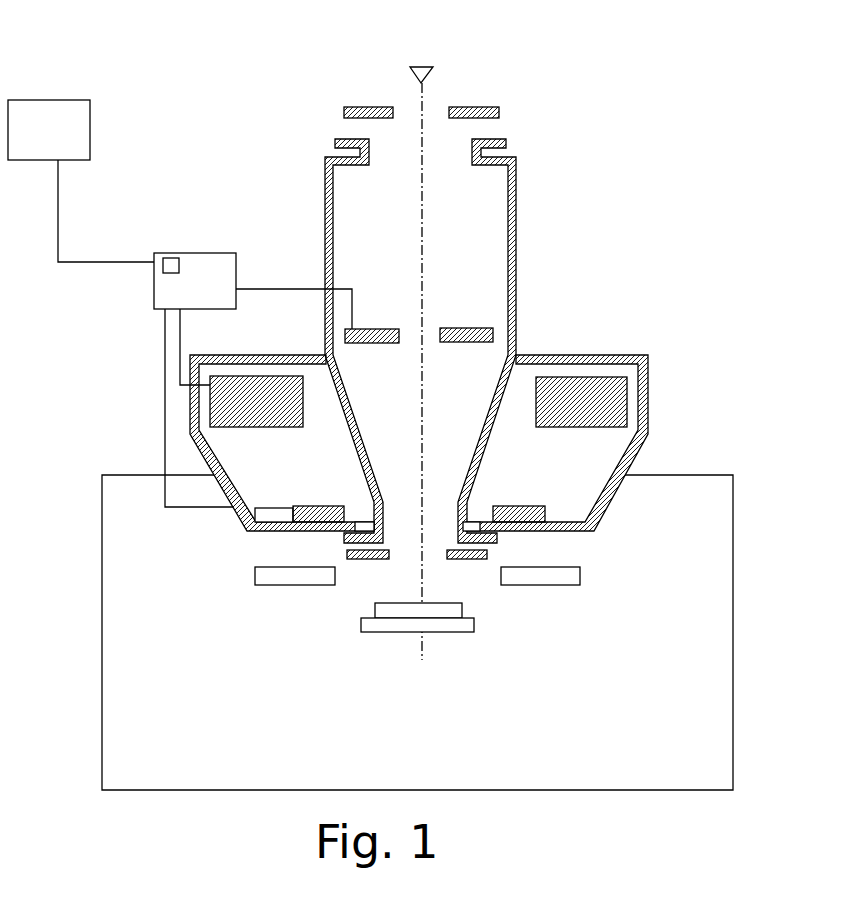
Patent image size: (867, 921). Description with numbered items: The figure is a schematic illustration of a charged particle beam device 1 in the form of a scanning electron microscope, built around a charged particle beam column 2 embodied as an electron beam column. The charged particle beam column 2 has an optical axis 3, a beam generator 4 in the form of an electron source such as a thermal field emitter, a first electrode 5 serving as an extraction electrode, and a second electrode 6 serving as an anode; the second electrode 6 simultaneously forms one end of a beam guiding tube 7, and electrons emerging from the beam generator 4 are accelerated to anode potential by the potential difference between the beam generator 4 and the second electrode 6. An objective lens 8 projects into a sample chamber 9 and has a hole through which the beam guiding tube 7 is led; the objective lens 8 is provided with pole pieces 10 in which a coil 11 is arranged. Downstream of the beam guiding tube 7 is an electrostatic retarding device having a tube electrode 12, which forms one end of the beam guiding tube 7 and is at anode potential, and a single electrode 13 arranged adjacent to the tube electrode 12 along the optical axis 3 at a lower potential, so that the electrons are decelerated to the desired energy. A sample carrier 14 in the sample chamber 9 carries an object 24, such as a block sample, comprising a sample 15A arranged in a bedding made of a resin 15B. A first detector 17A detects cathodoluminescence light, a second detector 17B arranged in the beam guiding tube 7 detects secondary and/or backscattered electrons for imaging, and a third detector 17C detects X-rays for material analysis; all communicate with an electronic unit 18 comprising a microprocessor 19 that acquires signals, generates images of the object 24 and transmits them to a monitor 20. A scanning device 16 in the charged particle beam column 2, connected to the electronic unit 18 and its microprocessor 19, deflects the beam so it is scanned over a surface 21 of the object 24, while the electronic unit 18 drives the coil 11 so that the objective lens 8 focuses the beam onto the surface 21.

The charged particle beam device 1 is at (214, 148).
The charged particle beam column 2 is at (612, 166).
The optical axis 3 is at (418, 200).
The beam generator 4 is at (427, 67).
The first electrode 5 is at (343, 113).
The second electrode 6 is at (335, 144).
The beam guiding tube 7 is at (518, 228).
The objective lens 8 is at (150, 396).
The sample chamber 9 is at (120, 475).
The pole pieces 10 is at (588, 355).
The coil 11 is at (627, 400).
The tube electrode 12 is at (490, 543).
The single electrode 13 is at (470, 560).
The sample carrier 14 is at (443, 635).
The sample 15A is at (474, 612).
The resin 15B is at (366, 613).
The scanning device 16 is at (545, 506).
The first detector 17A is at (255, 582).
The second detector 17B is at (375, 343).
The third detector 17C is at (580, 580).
The electronic unit 18 is at (196, 253).
The microprocessor 19 is at (154, 266).
The monitor 20 is at (50, 100).
The surface 21 is at (375, 603).
The object 24 is at (403, 612).